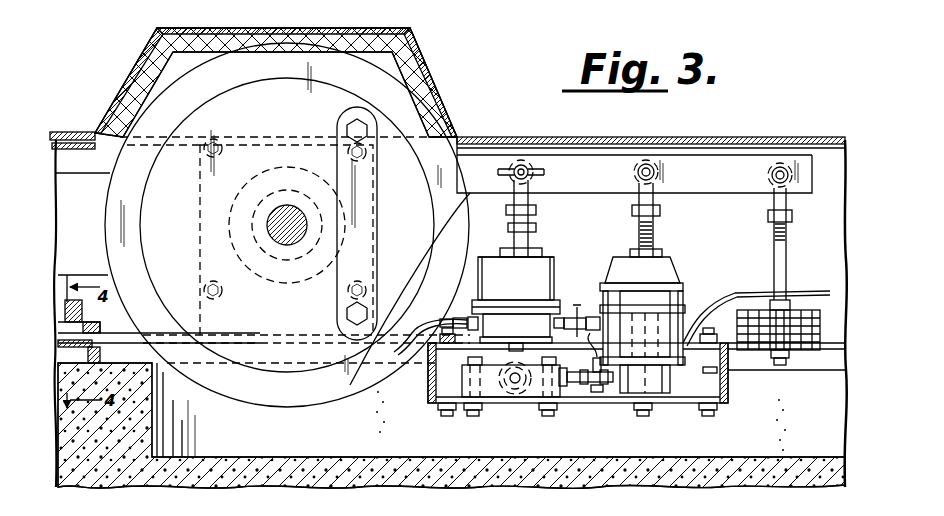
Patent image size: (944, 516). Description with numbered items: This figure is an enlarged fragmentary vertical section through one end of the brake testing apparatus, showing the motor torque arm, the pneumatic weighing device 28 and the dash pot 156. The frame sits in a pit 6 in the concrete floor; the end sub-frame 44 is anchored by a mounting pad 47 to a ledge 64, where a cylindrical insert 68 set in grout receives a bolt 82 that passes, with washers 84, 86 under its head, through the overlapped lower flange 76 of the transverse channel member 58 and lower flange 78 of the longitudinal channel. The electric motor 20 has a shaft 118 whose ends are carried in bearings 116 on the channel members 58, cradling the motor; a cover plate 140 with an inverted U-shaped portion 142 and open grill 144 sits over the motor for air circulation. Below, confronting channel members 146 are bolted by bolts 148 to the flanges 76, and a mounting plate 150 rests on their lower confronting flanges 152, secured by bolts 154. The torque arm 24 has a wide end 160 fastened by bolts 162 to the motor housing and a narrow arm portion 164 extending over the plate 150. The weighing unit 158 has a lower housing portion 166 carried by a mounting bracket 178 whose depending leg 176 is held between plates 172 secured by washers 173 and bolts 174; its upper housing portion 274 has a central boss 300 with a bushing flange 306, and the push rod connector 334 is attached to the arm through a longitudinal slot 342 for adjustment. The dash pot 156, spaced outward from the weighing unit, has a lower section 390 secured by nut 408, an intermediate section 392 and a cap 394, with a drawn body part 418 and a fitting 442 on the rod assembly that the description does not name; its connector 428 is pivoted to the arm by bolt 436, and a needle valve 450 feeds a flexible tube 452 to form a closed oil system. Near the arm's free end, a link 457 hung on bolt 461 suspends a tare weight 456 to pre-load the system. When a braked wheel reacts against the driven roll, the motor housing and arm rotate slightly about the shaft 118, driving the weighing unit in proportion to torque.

The pit 6 is at (238, 457).
The electric motor 20 is at (271, 403).
The torque arm 24 is at (813, 183).
The pneumatic weighing device 28 is at (671, 243).
The end sub-frame assembly 44 is at (508, 133).
The mounting pad 47 is at (112, 318).
The transverse channel member 58 is at (832, 157).
The ledge 64 is at (143, 380).
The cylindrical insert 68 is at (90, 360).
The lower flange 76 is at (140, 334).
The lower flange 78 is at (101, 352).
The bolt 82 is at (86, 278).
The washer 84 is at (103, 332).
The washer 86 is at (98, 326).
The bearing 116 is at (198, 200).
The motor shaft 118 is at (292, 212).
The cover plate 140 is at (84, 132).
The inverted U-shaped portion 142 is at (428, 40).
The open grill 144 is at (388, 31).
The channel member 146 is at (428, 392).
The bolt 148 is at (430, 346).
The mounting plate 150 is at (574, 395).
The lower confronting flange 152 is at (440, 410).
The bolt 154 is at (433, 395).
The dash pot 156 is at (683, 266).
The pneumatic weighing unit 158 is at (552, 262).
The wide end 160 is at (340, 165).
The bolt 162 is at (352, 120).
The arm portion 164 is at (559, 155).
The lower housing portion 166 is at (494, 308).
The plate 172 is at (492, 398).
The washer 173 is at (458, 362).
The bolt 174 is at (472, 411).
The depending leg 176 is at (517, 350).
The mounting bracket 178 is at (516, 353).
The upper housing portion 274 is at (530, 249).
The central boss 300 is at (452, 231).
The flange 306 is at (512, 248).
The connector 334 is at (530, 200).
The longitudinal slot 342 is at (509, 172).
The lower section 390 is at (663, 393).
The intermediate section 392 is at (664, 355).
The cap 394 is at (642, 270).
The nut 408 is at (640, 416).
The cylinder body 418 is at (645, 312).
The connector 428 is at (650, 195).
The bolt 436 is at (635, 172).
The coupling 442 is at (640, 257).
The needle valve 450 is at (597, 393).
The flexible tube 452 is at (612, 282).
The tare weight 456 is at (826, 322).
The link 457 is at (787, 252).
The bolt 461 is at (771, 176).